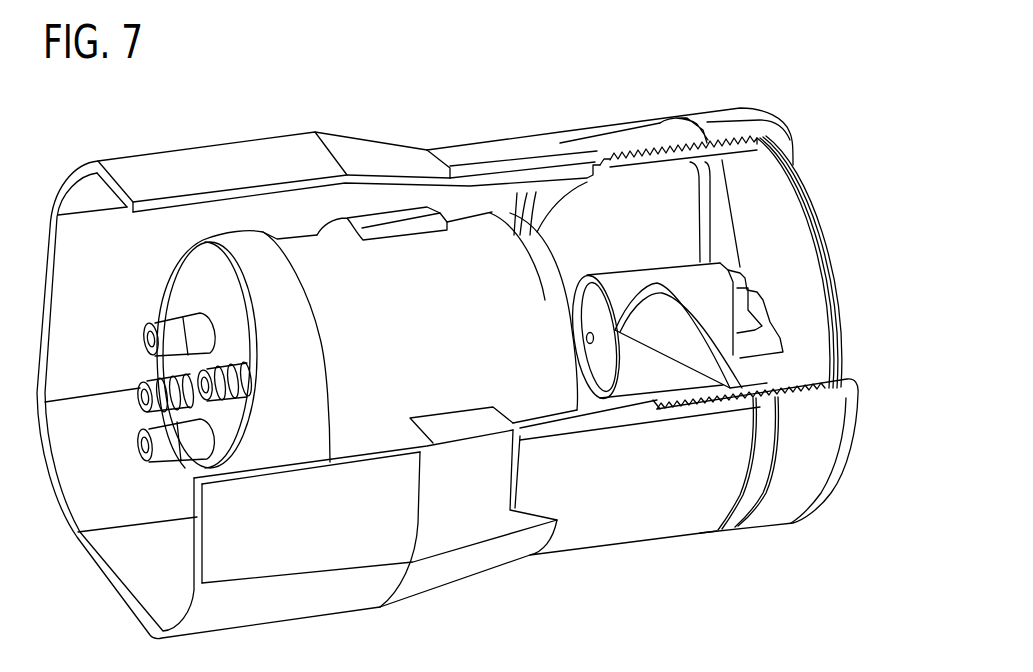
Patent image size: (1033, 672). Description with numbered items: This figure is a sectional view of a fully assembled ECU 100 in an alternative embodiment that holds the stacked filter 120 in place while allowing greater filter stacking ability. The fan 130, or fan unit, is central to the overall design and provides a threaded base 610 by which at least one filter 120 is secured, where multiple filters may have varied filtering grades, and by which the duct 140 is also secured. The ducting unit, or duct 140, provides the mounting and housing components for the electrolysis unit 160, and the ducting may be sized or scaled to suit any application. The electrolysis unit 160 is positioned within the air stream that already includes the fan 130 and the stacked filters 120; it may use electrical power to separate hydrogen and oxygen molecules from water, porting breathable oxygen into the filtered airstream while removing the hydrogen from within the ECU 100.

The ECU 100 is at (790, 54).
The stacked filter 120 is at (813, 214).
The fan 130 is at (612, 220).
The duct 140 is at (198, 147).
The electrolysis unit 160 is at (432, 347).
The threaded base 610 is at (733, 250).